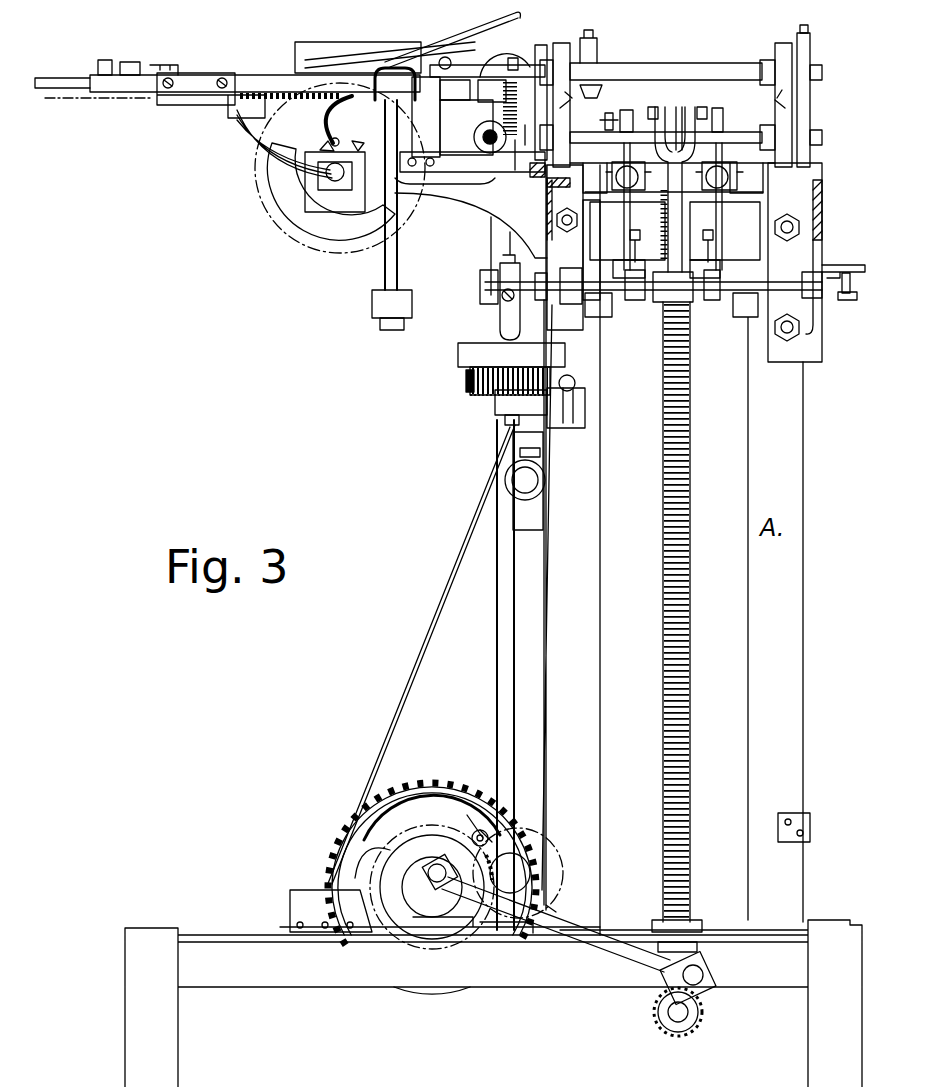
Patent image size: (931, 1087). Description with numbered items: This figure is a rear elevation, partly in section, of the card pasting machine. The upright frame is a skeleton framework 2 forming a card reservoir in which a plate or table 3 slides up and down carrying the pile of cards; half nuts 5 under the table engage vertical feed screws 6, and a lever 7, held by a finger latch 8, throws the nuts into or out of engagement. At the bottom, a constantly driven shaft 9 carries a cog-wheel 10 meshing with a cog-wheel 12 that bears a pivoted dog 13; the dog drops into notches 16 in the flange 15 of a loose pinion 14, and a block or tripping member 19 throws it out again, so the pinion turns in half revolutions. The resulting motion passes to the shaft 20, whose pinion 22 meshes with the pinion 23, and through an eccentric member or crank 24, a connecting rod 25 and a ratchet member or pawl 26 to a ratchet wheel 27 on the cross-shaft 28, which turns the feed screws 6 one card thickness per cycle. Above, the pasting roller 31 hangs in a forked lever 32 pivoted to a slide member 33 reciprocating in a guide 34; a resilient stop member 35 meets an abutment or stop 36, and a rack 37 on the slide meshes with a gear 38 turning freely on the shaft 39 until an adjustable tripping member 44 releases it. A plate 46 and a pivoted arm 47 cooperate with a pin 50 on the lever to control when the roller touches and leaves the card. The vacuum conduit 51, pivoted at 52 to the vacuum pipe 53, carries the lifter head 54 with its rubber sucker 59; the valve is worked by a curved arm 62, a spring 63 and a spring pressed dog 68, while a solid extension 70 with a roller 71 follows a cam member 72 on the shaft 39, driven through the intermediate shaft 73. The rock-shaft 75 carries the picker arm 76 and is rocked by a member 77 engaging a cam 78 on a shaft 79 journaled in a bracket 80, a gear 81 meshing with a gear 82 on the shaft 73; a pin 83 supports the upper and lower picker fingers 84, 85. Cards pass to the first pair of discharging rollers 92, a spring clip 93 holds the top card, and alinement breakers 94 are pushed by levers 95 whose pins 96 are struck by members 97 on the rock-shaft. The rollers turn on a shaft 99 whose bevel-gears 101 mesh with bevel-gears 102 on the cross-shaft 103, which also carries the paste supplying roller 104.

The skeleton framework 2 is at (590, 472).
The plate or table 3 is at (611, 260).
The half nuts 5 is at (656, 303).
The vertical feed screws 6 is at (660, 594).
The lever 7 is at (845, 264).
The finger latch 8 is at (841, 292).
The shaft 9 is at (540, 480).
The cog-wheel 10 is at (527, 449).
The cog-wheel 12 is at (418, 790).
The dog 13 is at (440, 826).
The pinion 14 is at (384, 848).
The flange 15 is at (375, 866).
The notches 16 is at (436, 850).
The block or tripping member 19 is at (320, 895).
The shaft 20 is at (522, 875).
The pinion 22 is at (540, 866).
The pinion 23 is at (395, 888).
The eccentric member or crank 24 is at (432, 885).
The connecting rod 25 is at (562, 928).
The ratchet member or pawl 26 is at (705, 982).
The ratchet wheel 27 is at (657, 1010).
The cross-shaft 28 is at (678, 1022).
The pasting roller 31 is at (515, 42).
The forked lever 32 is at (350, 48).
The slide member 33 is at (58, 79).
The guide 34 is at (265, 80).
The resilient stop member 35 is at (128, 63).
The abutment or stop 36 is at (100, 62).
The rack 37 is at (97, 100).
The gear 38 is at (262, 183).
The shaft 39 is at (335, 182).
The adjustable tripping member 44 is at (345, 74).
The plate 46 is at (375, 46).
The arm 47 is at (482, 30).
The pin 50 is at (330, 55).
The vacuum conduit 51 is at (460, 86).
The pivotal point 52 is at (425, 98).
The vacuum pipe 53 is at (397, 255).
The lifter head 54 is at (594, 60).
The rubber sucker 59 is at (600, 92).
The curved arm 62 is at (516, 60).
The spring 63 is at (508, 112).
The spring pressed dog 68 is at (504, 90).
The solid extension 70 is at (332, 118).
The roller 71 is at (340, 140).
The cam member 72 is at (295, 208).
The intermediate shaft 73 is at (500, 232).
The rock-shaft 75 is at (618, 300).
The picker arm 76 is at (680, 216).
The member 77 is at (500, 326).
The cam 78 is at (462, 350).
The shaft 79 is at (505, 420).
The bracket 80 is at (540, 401).
The gear 81 is at (470, 378).
The gear 82 is at (470, 394).
The pin 83 is at (699, 106).
The upper picker finger 84 is at (677, 106).
The lower picker finger 85 is at (655, 106).
The first pair of discharging rollers 92 is at (583, 103).
The spring clip 93 is at (609, 114).
The alinement breakers 94 is at (627, 110).
The levers 95 is at (625, 220).
The pins 96 is at (641, 238).
The members 97 is at (618, 268).
The shaft 99 is at (712, 68).
The bevel-gears 101 is at (512, 155).
The bevel-gears 102 is at (478, 174).
The cross-shaft 103 is at (482, 137).
The paste supplying roller 104 is at (478, 127).